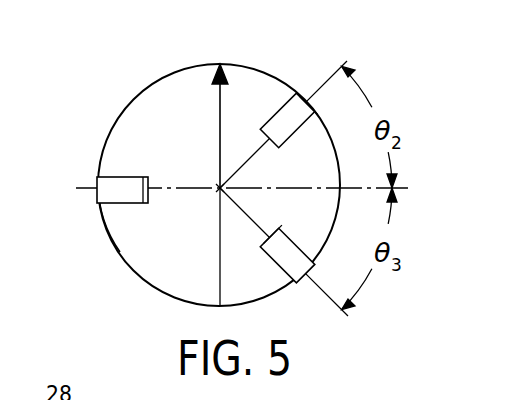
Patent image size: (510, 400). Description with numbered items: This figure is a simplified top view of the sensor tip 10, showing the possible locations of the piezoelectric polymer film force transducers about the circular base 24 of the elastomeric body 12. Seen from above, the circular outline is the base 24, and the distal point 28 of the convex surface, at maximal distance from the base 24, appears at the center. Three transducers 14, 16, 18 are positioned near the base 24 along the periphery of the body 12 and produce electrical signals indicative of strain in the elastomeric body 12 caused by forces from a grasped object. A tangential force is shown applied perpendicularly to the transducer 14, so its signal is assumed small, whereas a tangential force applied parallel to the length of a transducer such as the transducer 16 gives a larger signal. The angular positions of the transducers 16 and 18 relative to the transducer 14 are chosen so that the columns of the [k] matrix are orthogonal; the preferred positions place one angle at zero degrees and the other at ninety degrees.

The sensor tip 10 is at (113, 98).
The elastomeric body 12 is at (117, 252).
The transducer 14 is at (97, 200).
The transducer 16 is at (298, 280).
The transducer 18 is at (300, 92).
The circular base 24 is at (233, 64).
The distal point 28 is at (218, 190).